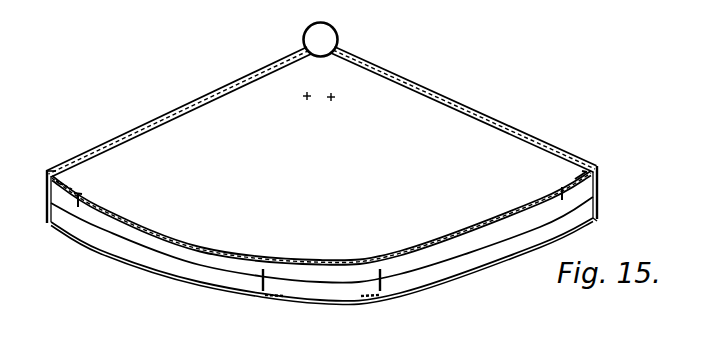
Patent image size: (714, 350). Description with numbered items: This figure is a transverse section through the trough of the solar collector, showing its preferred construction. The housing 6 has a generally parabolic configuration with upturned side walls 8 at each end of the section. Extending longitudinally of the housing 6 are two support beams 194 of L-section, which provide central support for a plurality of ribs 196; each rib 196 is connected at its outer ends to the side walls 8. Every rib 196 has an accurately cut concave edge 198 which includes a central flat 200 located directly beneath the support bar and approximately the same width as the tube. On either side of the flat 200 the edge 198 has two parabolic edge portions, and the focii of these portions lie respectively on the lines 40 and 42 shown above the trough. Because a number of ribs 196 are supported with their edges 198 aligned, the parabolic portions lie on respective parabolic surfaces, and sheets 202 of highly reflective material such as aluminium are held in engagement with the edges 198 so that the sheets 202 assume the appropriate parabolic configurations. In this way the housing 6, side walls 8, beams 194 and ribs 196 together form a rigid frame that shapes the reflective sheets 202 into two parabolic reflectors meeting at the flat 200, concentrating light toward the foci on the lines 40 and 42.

The housing 6 is at (458, 282).
The side walls 8 is at (47, 207).
The line 40 is at (306, 97).
The line 42 is at (333, 98).
The support beams 194 is at (258, 284).
The ribs 196 is at (200, 264).
The concave edge 198 is at (498, 225).
The central flat 200 is at (325, 265).
The sheets 202 is at (163, 238).